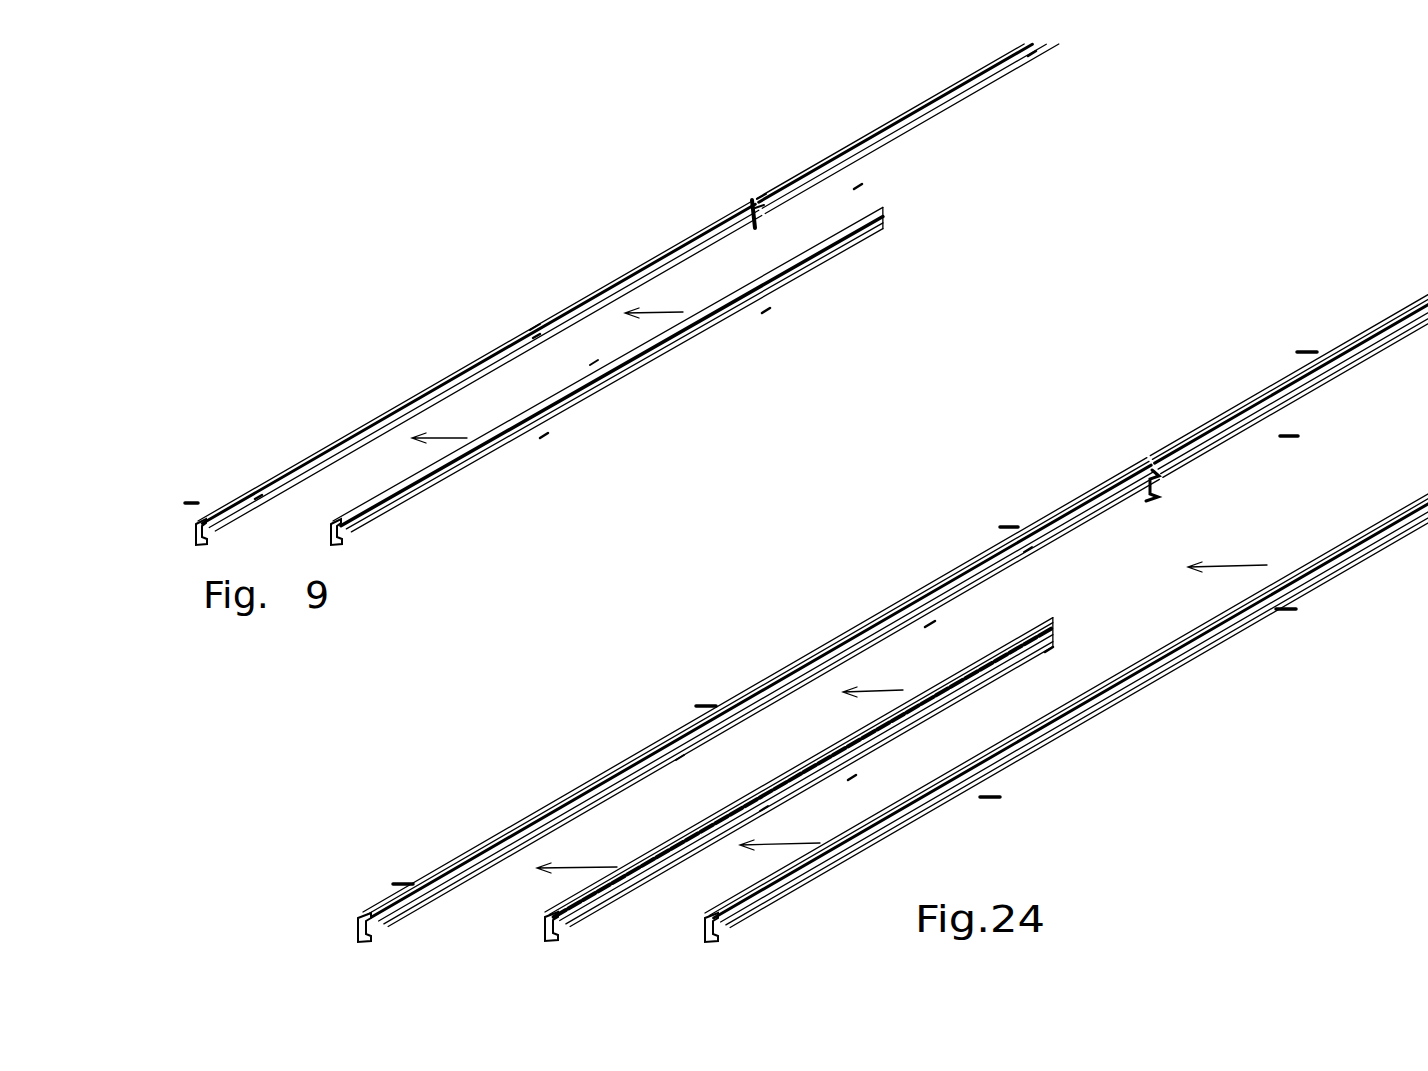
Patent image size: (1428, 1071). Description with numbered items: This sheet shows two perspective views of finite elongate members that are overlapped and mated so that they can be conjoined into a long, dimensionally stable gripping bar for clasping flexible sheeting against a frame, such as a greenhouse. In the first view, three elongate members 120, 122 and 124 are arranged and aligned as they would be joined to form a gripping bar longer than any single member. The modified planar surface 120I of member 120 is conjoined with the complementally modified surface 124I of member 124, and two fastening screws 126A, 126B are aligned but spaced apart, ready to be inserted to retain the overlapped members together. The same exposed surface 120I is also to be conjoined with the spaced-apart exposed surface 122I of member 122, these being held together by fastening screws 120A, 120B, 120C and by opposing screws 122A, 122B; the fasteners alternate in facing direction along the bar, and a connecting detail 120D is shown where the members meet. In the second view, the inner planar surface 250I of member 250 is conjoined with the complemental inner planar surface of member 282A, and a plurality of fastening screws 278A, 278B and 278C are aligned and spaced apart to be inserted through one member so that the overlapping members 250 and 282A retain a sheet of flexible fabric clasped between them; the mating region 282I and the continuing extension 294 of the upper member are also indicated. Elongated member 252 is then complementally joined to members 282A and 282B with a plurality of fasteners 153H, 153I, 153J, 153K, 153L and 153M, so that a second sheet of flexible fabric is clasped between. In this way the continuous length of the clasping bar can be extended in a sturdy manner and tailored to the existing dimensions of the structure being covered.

In FIG. 9, the elongate member 120 is at (340, 428).
In FIG. 9, the fastening screw 120A is at (187, 503).
In FIG. 9, the fastening screw 120B is at (405, 377).
In FIG. 9, the fastening screw 120C is at (627, 247).
In FIG. 9, the rail segment coupling end 120D is at (742, 195).
In FIG. 9, the modified planar surface 120I is at (535, 328).
In FIG. 9, the elongate member 122 is at (686, 356).
In FIG. 9, the opposing screw 122A is at (553, 443).
In FIG. 9, the opposing screw 122B is at (775, 318).
In FIG. 9, the exposed surface 122I is at (637, 377).
In FIG. 9, the elongate member 124 is at (956, 127).
In FIG. 9, the complementally modified surface 124I is at (760, 203).
In FIG. 9, the fastening screw 126A is at (860, 187).
In FIG. 9, the fastening screw 126B is at (1083, 62).
In FIG. 24, the member 250 is at (640, 742).
In FIG. 24, the inner planar surface 250I is at (678, 758).
In FIG. 24, the elongated member 252 is at (1172, 675).
In FIG. 24, the fastening screw 278A is at (663, 924).
In FIG. 24, the fastening screw 278B is at (913, 770).
In FIG. 24, the fastening screw 278C is at (1120, 642).
In FIG. 24, the member 282A is at (955, 719).
In FIG. 24, the member 282B is at (945, 622).
In FIG. 24, the slider strip inner surface 282I is at (1028, 550).
In FIG. 24, the rail extension segment 294 is at (1352, 394).
In FIG. 24, the fastener 153H is at (1000, 797).
In FIG. 24, the fastener 153I is at (1297, 609).
In FIG. 24, the fastener 153J is at (398, 884).
In FIG. 24, the fastener 153K is at (698, 706).
In FIG. 24, the fastener 153L is at (1000, 527).
In FIG. 24, the fastener 153M is at (1305, 352).